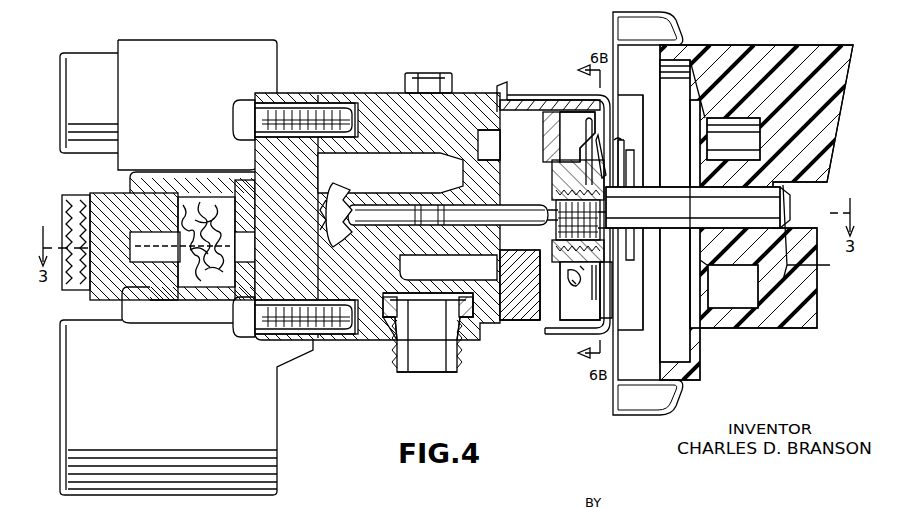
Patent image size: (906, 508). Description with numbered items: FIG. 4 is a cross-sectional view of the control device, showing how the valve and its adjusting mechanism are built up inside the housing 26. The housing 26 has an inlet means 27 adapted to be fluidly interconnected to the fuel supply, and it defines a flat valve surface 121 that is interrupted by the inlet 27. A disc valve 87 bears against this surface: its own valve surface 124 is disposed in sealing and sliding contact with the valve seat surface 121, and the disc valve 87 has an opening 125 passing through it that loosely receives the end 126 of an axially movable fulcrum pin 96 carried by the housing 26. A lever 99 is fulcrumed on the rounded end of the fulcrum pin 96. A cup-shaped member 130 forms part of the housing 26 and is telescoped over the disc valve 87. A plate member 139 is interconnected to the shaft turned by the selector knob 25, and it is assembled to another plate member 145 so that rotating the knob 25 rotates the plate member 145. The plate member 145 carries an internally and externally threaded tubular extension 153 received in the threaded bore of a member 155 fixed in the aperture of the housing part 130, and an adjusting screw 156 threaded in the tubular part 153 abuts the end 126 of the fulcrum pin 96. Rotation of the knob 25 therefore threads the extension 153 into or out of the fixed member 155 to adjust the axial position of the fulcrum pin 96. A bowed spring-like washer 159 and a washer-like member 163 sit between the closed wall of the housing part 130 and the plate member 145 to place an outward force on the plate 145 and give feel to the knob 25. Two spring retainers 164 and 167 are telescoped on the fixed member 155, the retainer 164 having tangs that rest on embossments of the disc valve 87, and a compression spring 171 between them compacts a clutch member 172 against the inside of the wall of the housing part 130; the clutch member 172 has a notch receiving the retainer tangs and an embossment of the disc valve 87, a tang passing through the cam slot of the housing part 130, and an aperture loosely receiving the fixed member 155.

The selector means 25 is at (752, 46).
The housing 26 is at (465, 98).
The inlet means 27 is at (490, 320).
The disc valve member 87 is at (520, 100).
The fulcrum pin 96 is at (480, 222).
The lever 99 is at (355, 200).
The flat valve surface 121 is at (500, 128).
The valve surface 124 is at (497, 268).
The opening 125 is at (540, 250).
The end of fulcrum pin 126 is at (530, 206).
The cup-shaped member 130 is at (548, 95).
The plate member 139 is at (645, 284).
The plate member 145 is at (628, 172).
The tubular extension 153 is at (555, 262).
The fixed threaded member 155 is at (545, 288).
The adjusting screw 156 is at (578, 180).
The bowed spring-like washer 159 is at (602, 145).
The washer-like member 163 is at (620, 148).
The spring retainer 164 is at (553, 145).
The spring retainer 167 is at (596, 122).
The compression spring 171 is at (586, 280).
The clutch member 172 is at (605, 304).